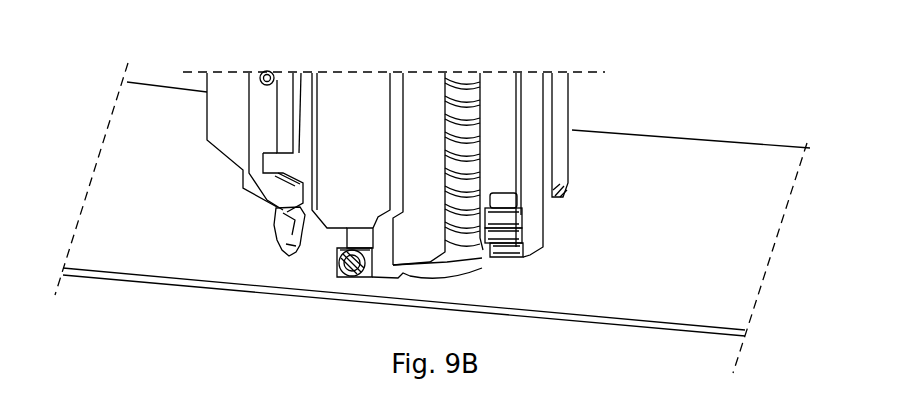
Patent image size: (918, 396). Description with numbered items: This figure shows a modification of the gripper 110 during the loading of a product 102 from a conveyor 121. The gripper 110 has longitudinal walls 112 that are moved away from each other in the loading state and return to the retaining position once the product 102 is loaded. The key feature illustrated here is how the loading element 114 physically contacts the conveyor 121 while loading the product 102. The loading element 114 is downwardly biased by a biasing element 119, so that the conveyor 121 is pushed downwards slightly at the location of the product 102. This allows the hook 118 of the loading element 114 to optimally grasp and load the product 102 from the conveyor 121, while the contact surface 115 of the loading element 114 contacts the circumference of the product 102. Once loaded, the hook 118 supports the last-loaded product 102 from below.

The product 102 is at (467, 263).
The gripper 110 is at (153, 130).
The longitudinal walls 112 is at (530, 130).
The loading element 114 is at (380, 262).
The contact surface 115 is at (505, 232).
The hook 118 is at (407, 280).
The biasing element 119 is at (342, 163).
The conveyor 121 is at (665, 257).